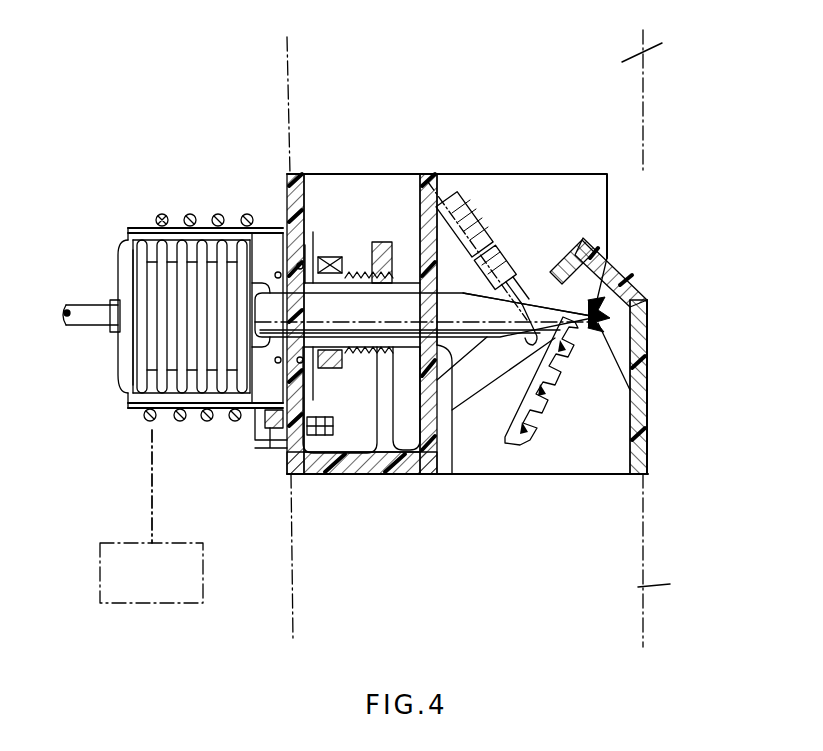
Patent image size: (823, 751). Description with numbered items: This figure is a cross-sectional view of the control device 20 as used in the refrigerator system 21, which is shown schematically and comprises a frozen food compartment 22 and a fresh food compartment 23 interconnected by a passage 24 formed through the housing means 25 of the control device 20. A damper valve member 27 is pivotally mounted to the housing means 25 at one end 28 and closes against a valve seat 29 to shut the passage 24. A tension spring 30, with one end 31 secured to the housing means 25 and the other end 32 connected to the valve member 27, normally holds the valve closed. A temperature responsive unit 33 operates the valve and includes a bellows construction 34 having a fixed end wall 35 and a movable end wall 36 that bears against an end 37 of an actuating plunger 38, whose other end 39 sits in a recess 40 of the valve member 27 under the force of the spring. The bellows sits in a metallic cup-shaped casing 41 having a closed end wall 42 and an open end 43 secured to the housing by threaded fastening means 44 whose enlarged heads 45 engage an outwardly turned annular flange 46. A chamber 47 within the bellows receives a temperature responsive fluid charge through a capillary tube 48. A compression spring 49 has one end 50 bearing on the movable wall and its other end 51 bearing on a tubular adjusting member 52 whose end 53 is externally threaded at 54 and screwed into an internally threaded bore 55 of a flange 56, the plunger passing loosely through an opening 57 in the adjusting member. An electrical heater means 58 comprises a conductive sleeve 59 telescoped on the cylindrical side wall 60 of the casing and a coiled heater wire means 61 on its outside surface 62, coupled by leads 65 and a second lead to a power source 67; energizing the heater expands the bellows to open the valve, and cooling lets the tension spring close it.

The control device 20 is at (648, 327).
The refrigerator system 21 is at (683, 125).
The frozen food compartment 22 is at (672, 585).
The fresh food compartment 23 is at (660, 45).
The passage 24 is at (620, 436).
The housing means 25 is at (625, 287).
The damper valve member 27 is at (548, 376).
The end of valve member 28 is at (583, 262).
The valve seat 29 is at (452, 402).
The tension spring 30 is at (500, 228).
The end of tension spring 31 is at (458, 174).
The other end of tension spring 32 is at (530, 355).
The temperature responsive unit 33 is at (313, 290).
The bellows construction 34 is at (152, 357).
The fixed end wall 35 is at (127, 345).
The movable end wall 36 is at (267, 313).
The end of actuating plunger 37 is at (313, 252).
The actuating plunger 38 is at (443, 313).
The other end of plunger 39 is at (577, 300).
The recess 40 is at (600, 345).
The cup-shaped casing member 41 is at (220, 410).
The closed end wall 42 is at (118, 273).
The open end 43 is at (340, 415).
The threaded fastening means 44 is at (320, 440).
The enlarged heads 45 is at (270, 450).
The annular flange 46 is at (290, 458).
The chamber 47 is at (258, 385).
The capillary tube 48 is at (80, 305).
The compression spring 49 is at (312, 246).
The end of compression spring 50 is at (285, 380).
The other end of compression spring 51 is at (369, 261).
The tubular adjusting member 52 is at (392, 244).
The end of adjusting member 53 is at (412, 235).
The external threads 54 is at (358, 353).
The internally threaded bore 55 is at (395, 348).
The flange 56 is at (396, 445).
The opening 57 is at (361, 300).
The electrical heater means 58 is at (157, 212).
The conductive sleeve 59 is at (140, 228).
The cylindrical side wall 60 is at (148, 410).
The electrical heater wire means 61 is at (188, 215).
The outside surface 62 is at (165, 412).
The lead 65 is at (150, 487).
The electrical power source 67 is at (100, 575).